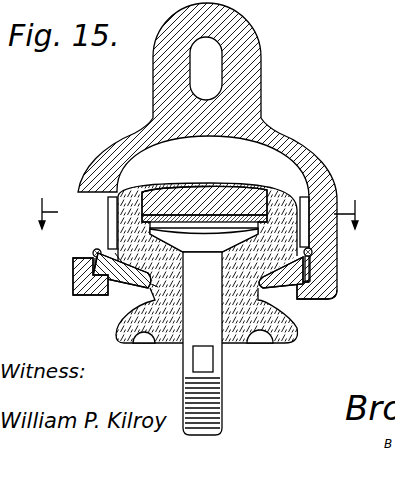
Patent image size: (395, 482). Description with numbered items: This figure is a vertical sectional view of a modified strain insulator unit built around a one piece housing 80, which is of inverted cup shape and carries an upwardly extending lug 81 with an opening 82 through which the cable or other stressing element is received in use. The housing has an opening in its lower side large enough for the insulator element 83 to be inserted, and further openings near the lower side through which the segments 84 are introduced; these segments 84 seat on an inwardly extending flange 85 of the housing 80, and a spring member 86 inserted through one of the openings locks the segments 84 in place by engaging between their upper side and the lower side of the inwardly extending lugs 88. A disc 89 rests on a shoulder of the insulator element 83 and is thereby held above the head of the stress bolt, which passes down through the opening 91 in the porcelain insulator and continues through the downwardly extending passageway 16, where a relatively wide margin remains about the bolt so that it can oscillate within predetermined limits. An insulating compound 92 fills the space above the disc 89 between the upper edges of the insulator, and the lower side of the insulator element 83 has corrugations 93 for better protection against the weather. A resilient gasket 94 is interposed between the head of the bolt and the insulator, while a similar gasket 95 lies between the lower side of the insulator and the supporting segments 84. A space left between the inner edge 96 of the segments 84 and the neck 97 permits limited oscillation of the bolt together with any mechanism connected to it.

The passageway 16 is at (201, 213).
The housing 80 is at (298, 148).
The lug 81 is at (244, 78).
The opening 82 is at (190, 75).
The insulator element 83 is at (296, 330).
The segments 84 is at (323, 300).
The inwardly extending flange 85 is at (184, 240).
The spring member 86 is at (197, 331).
The inwardly extending lugs 88 is at (308, 236).
The disc 89 is at (158, 212).
The opening 91 is at (225, 344).
The insulating compound 92 is at (239, 192).
The corrugations 93 is at (258, 341).
The resilient gasket 94 is at (138, 262).
The gasket 95 is at (74, 282).
The inner edge 96 is at (287, 290).
The neck 97 is at (152, 290).